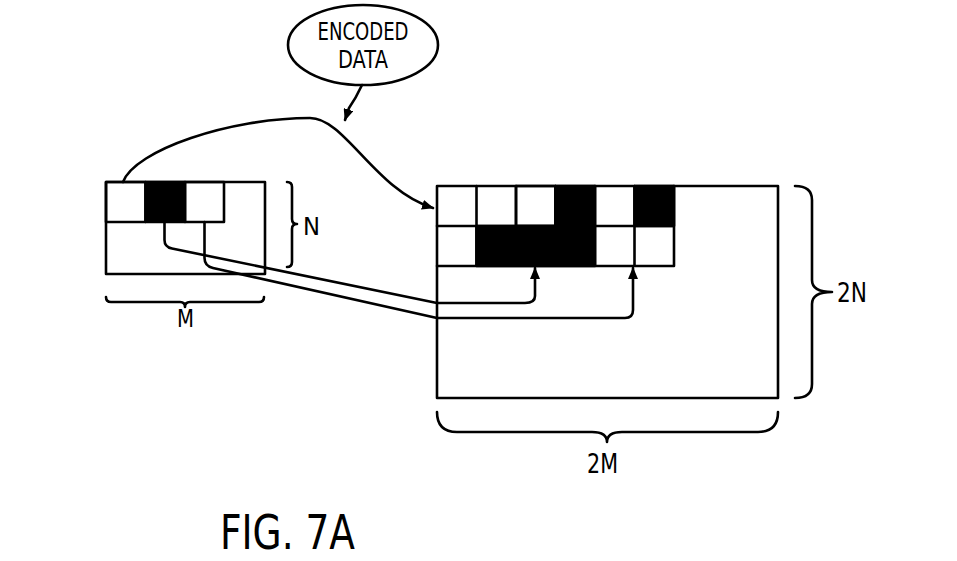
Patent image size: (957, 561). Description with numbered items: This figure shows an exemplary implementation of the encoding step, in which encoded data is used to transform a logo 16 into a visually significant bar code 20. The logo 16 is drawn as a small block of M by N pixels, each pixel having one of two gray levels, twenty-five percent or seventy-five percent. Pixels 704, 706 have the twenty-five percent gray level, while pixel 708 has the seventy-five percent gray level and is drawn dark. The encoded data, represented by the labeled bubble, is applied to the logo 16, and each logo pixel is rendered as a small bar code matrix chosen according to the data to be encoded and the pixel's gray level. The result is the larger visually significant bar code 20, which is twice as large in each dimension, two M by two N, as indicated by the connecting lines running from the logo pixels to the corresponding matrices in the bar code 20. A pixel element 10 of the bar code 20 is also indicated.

The pixel 704 is at (121, 203).
The pixel 708 is at (163, 182).
The pixel 706 is at (205, 203).
The logo 16 is at (105, 255).
The pixel of enlarged image block 10 is at (530, 202).
The visually significant bar code (VSBC) 20 is at (437, 380).